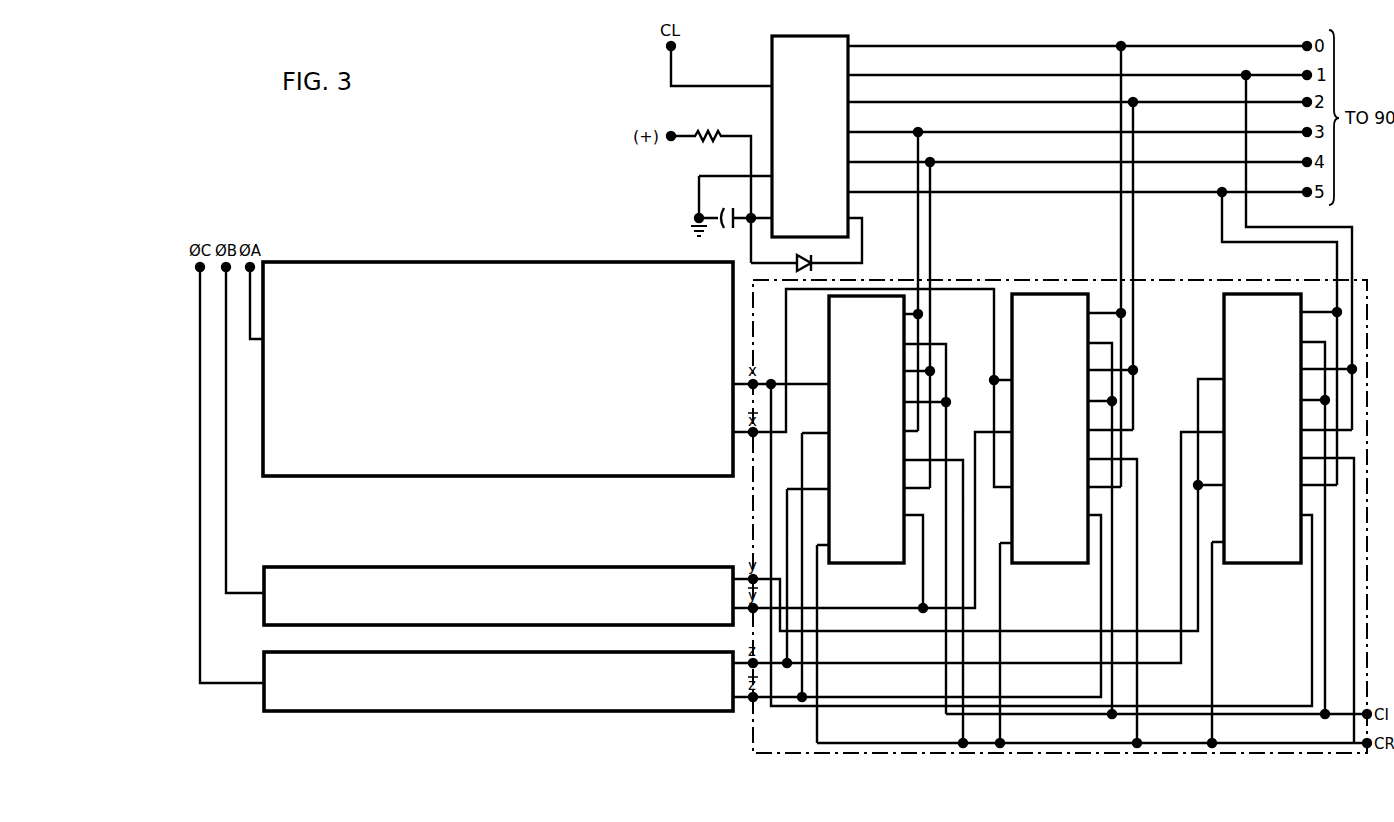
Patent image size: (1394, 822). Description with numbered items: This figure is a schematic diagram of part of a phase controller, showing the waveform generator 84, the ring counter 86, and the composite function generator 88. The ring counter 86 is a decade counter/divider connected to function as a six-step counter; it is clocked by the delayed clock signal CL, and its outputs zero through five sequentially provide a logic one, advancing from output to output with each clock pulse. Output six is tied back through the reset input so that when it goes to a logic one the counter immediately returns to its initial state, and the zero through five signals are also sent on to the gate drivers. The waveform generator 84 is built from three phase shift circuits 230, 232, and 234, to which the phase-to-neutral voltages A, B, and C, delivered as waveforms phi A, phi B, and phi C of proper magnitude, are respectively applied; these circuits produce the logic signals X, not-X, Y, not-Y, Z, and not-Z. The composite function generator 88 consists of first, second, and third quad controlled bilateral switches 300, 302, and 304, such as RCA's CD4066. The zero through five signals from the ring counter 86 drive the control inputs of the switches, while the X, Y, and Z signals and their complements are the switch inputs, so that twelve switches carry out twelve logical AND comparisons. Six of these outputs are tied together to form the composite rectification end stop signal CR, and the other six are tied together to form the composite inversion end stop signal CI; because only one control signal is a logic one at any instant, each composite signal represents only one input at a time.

The waveform generator 84 is at (470, 486).
The ring counter 86 is at (798, 36).
The composite function generator 88 is at (1012, 280).
The phase shift circuit 230 is at (486, 262).
The phase shift circuit 232 is at (362, 567).
The phase shift circuit 234 is at (344, 711).
The first quad controlled bilateral switch 300 is at (847, 563).
The second quad controlled bilateral switch 302 is at (1032, 563).
The third quad controlled bilateral switch 304 is at (1236, 563).